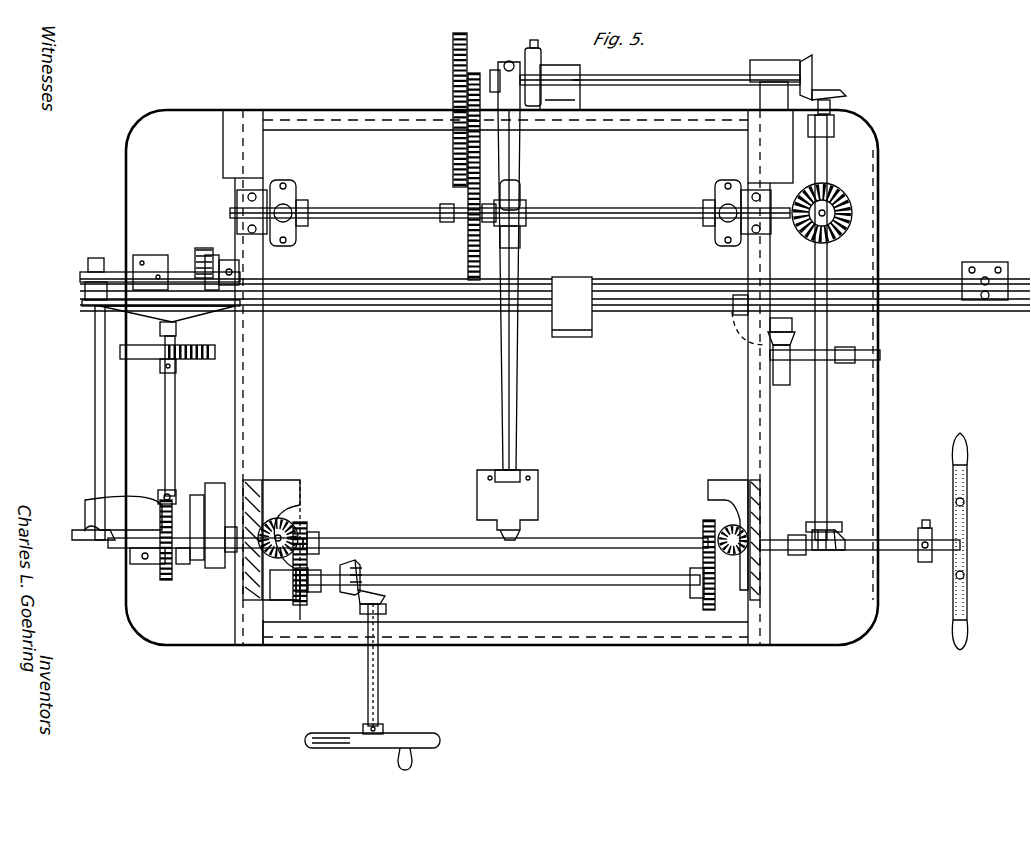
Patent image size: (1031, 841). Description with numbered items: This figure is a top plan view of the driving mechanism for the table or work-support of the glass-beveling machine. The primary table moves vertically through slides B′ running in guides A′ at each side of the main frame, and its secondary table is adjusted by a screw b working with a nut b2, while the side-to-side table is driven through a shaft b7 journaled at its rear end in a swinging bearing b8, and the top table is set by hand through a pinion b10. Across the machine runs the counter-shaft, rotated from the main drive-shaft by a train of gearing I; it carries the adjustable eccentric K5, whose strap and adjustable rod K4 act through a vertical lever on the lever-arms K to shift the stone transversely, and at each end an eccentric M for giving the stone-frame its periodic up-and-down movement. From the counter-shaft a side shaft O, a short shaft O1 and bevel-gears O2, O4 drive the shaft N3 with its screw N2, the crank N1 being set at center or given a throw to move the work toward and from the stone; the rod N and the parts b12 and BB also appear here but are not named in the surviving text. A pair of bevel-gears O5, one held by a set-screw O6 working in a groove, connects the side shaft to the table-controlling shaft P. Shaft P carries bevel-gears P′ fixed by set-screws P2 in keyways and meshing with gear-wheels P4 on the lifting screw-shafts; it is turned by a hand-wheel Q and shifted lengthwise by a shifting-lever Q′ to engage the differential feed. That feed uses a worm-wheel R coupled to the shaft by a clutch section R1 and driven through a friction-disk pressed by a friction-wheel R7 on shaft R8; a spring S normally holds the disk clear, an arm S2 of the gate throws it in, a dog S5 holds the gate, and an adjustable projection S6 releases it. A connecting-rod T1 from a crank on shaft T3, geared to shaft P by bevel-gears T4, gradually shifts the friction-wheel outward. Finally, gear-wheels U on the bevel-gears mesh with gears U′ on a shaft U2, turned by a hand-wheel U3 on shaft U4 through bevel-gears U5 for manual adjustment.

The train of gearing I is at (455, 175).
The lever-arms K is at (510, 199).
The adjustable rod K4 is at (520, 237).
The adjustable eccentric K5 is at (522, 194).
The eccentrics M is at (715, 190).
The vertical rod N is at (519, 290).
The crank N1 is at (505, 60).
The screw N2 is at (542, 55).
The shaft N3 is at (660, 89).
The side shaft O is at (828, 165).
The short shaft O1 is at (832, 222).
The bevel-gear O2 is at (852, 201).
The bevel-gear O4 is at (835, 92).
The pair of bevel-gears O5 is at (840, 525).
The set-screw O6 is at (860, 534).
The hand-wheel Q is at (953, 612).
The shifting-lever Q′ is at (925, 562).
The screw b is at (540, 515).
The nut b2 is at (530, 490).
The shaft b7 is at (785, 385).
The swinging bearing b8 is at (736, 325).
The pinion b10 is at (555, 304).
The shaft block b12 is at (592, 325).
The connecting-rod T1 is at (96, 258).
The shaft T3 is at (95, 380).
The bevel-gears T4 is at (95, 540).
The worm-wheel R is at (140, 564).
The clutch section R1 is at (186, 564).
The friction-wheel R7 is at (200, 248).
The shaft R8 is at (300, 253).
The spring S is at (197, 495).
The gate arm S2 is at (160, 490).
The dog or catch S5 is at (215, 483).
The adjustable projection S6 is at (172, 560).
The slides B′ is at (285, 480).
The bracket BB is at (715, 480).
The guides A′ is at (258, 560).
The table-controlling shaft P is at (360, 548).
The bevel-gears P′ is at (300, 522).
The set-screws P2 is at (312, 532).
The gear-wheels P4 is at (285, 520).
The gear-wheels U is at (312, 522).
The gears U′ is at (306, 568).
The shaft U2 is at (435, 585).
The hand-wheel U3 is at (408, 733).
The shaft U4 is at (378, 668).
The bevel-gears U5 is at (360, 565).